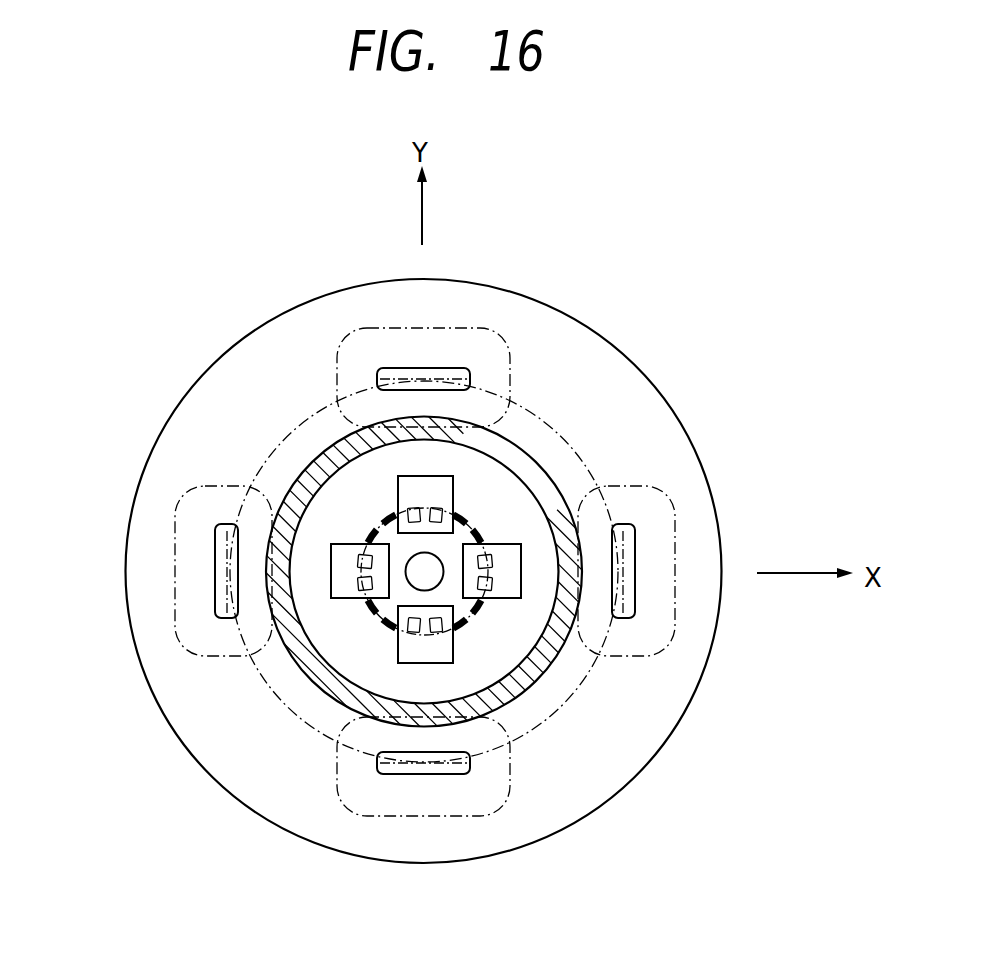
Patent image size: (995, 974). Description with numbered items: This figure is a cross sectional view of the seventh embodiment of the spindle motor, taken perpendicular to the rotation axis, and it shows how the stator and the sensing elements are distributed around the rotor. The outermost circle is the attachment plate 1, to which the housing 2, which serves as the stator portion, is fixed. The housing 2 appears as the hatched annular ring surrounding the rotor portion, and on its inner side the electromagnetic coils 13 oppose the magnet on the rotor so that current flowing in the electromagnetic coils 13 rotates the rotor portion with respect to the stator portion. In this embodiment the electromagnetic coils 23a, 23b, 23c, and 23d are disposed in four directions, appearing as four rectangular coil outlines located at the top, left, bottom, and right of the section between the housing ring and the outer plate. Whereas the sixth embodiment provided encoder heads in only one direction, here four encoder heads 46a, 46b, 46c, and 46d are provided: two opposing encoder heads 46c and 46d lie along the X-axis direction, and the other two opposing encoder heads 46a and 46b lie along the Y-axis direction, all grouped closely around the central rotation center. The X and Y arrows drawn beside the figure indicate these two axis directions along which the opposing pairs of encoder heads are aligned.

The attachment plate 1 is at (627, 403).
The housing 2 is at (540, 657).
The electromagnetic coils 13 is at (372, 535).
The electromagnetic coil 23a is at (652, 557).
The electromagnetic coil 23b is at (195, 612).
The electromagnetic coil 23c is at (455, 792).
The electromagnetic coil 23d is at (453, 337).
The encoder head 46a is at (443, 652).
The encoder head 46b is at (438, 488).
The encoder head 46c is at (503, 557).
The encoder head 46d is at (343, 557).